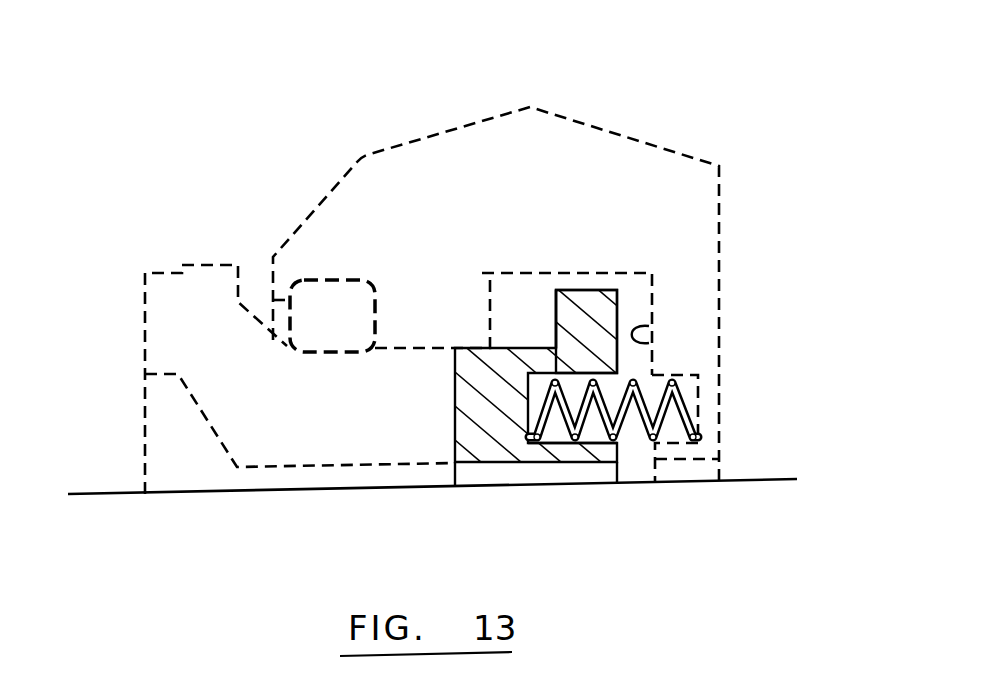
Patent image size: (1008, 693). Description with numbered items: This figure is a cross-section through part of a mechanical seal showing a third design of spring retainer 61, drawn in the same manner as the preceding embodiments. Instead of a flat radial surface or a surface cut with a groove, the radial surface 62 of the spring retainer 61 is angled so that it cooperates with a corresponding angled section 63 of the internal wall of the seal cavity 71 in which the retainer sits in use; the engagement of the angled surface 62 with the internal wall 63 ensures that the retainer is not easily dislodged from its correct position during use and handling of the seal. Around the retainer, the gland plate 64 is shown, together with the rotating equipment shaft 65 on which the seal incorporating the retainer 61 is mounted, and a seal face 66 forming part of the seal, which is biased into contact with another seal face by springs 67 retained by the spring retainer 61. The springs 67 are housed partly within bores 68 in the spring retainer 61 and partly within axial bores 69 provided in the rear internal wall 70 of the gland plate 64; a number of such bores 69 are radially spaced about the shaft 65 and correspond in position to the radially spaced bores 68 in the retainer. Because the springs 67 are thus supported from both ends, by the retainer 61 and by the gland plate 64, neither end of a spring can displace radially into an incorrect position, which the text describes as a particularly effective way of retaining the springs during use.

The spring retainer 61 is at (598, 312).
The radial surface 62 is at (557, 318).
The angled section of internal wall 63 is at (487, 300).
The gland plate 64 is at (632, 190).
The rotating equipment shaft 65 is at (455, 580).
The seal face 66 is at (200, 322).
The springs 67 is at (700, 420).
The bores in spring retainer 68 is at (597, 430).
The axial bores in gland plate 69 is at (700, 383).
The rear internal wall of gland plate 70 is at (643, 322).
The seal cavity 71 is at (540, 292).